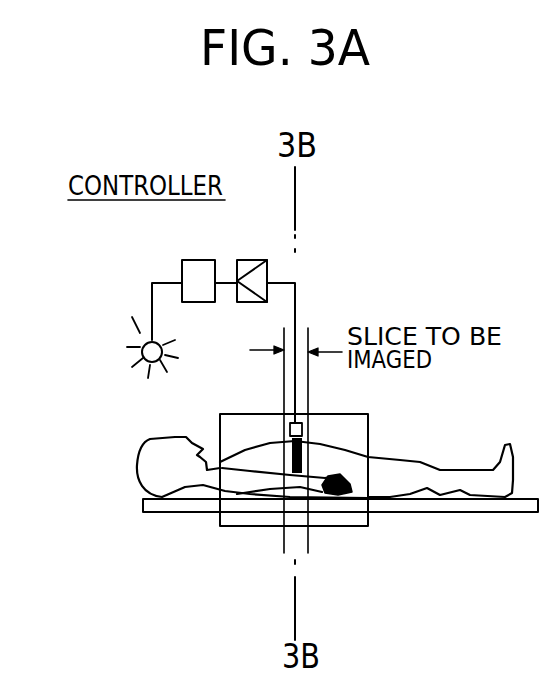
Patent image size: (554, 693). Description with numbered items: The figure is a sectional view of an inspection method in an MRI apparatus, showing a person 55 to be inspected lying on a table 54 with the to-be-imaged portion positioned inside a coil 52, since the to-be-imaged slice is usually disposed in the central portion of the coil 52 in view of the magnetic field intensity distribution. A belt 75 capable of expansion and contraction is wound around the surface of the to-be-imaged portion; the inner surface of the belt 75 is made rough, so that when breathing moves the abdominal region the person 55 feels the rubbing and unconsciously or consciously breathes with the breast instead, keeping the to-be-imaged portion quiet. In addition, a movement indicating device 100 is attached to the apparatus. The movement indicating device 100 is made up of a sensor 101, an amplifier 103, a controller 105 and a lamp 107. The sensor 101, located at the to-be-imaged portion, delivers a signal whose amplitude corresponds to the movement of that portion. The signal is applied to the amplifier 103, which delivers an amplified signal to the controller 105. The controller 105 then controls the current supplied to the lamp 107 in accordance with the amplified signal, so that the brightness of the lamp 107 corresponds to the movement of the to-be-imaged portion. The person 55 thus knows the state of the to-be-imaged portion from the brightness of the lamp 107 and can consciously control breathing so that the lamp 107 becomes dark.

The movement indicating device 100 is at (317, 272).
The sensor 101 is at (290, 427).
The amplifier 103 is at (250, 260).
The controller 105 is at (188, 260).
The lamp 107 is at (126, 325).
The coil 52 is at (358, 527).
The patient table 54 is at (188, 514).
The person to be inspected 55 is at (436, 460).
The belt 75 is at (292, 497).